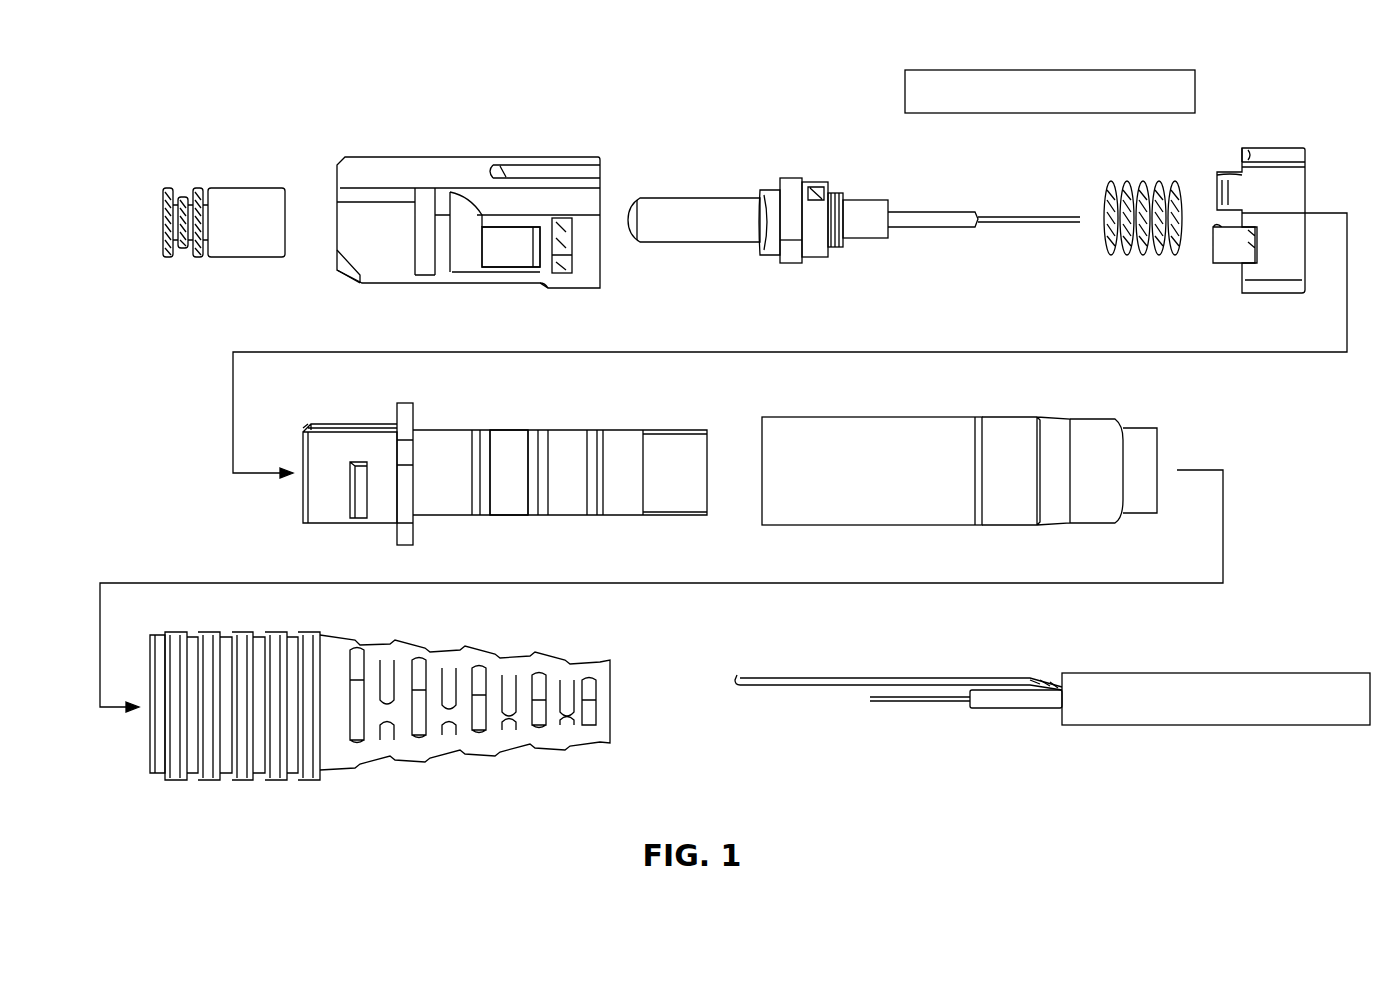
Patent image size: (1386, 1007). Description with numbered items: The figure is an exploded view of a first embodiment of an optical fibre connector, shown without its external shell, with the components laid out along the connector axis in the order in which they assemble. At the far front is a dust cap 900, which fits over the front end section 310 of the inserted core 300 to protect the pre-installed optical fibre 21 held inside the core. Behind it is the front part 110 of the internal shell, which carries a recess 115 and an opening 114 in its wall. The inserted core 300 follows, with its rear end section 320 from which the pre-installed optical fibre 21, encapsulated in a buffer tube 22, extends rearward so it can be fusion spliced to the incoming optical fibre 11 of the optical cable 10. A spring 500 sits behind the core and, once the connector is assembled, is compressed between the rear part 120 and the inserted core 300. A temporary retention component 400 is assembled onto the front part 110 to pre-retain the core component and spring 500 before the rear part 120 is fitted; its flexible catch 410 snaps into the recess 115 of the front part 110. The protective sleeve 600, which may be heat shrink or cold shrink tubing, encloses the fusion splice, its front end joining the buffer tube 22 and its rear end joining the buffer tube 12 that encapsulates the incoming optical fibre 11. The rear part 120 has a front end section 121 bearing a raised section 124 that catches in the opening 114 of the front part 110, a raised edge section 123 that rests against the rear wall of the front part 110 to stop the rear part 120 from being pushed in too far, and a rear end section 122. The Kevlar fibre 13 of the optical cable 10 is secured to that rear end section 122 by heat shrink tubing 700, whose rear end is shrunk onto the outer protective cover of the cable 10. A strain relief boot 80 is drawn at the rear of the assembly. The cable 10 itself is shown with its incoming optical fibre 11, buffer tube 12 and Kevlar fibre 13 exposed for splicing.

The dust cap 900 is at (238, 200).
The front part 110 is at (470, 222).
The recess 115 is at (520, 250).
The opening 114 is at (565, 275).
The front end section 310 is at (672, 210).
The inserted core 300 is at (788, 185).
The rear end section 320 is at (858, 200).
The buffer tube 22 is at (936, 215).
The pre-installed optical fibre 21 is at (1015, 217).
The protective sleeve 600 is at (1035, 90).
The spring 500 is at (1138, 185).
The temporary retention component 400 is at (1250, 202).
The flexible catch 410 is at (1222, 250).
The rear part 120 is at (531, 471).
The front end section 121 is at (345, 440).
The rear end section 122 is at (520, 447).
The raised edge section 123 is at (415, 525).
The raised section 124 is at (356, 485).
The heat shrink tubing 700 is at (872, 437).
The boot 80 is at (345, 765).
The Kevlar fibre 13 is at (815, 680).
The incoming optical fibre 11 is at (920, 703).
The buffer tube 12 is at (1000, 700).
The optical cable 10 is at (1185, 680).